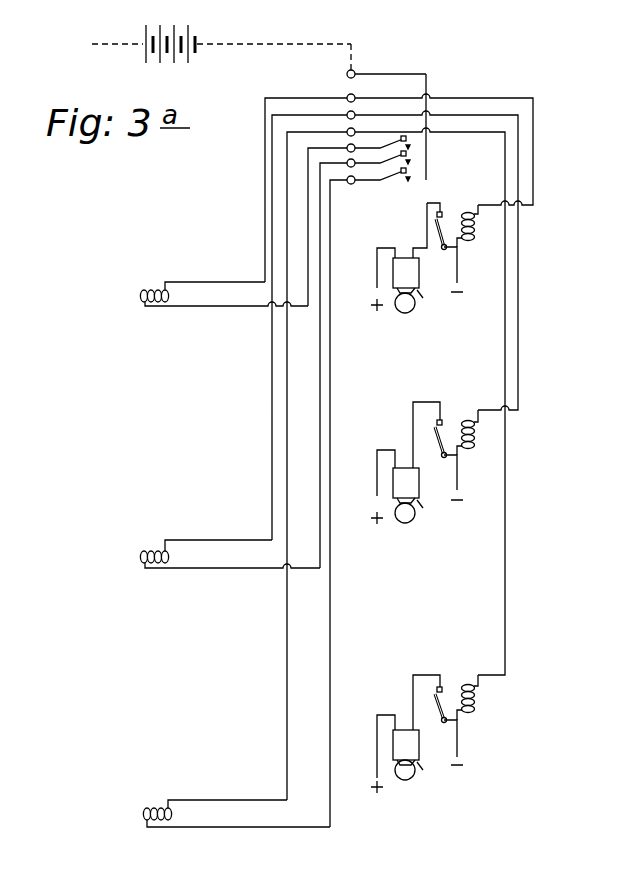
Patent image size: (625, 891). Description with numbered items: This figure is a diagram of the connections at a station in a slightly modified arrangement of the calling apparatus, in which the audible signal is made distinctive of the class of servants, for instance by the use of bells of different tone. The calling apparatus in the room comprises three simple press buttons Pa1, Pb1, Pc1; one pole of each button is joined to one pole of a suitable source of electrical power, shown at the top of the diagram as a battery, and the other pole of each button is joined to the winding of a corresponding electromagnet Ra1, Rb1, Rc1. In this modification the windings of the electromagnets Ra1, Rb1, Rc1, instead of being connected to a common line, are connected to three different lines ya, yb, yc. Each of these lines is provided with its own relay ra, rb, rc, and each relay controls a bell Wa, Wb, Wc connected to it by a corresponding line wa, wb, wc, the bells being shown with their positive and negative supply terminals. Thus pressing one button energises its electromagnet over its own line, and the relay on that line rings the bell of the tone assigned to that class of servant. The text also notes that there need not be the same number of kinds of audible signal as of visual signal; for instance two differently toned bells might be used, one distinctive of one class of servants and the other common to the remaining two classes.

The line ya is at (456, 92).
The line yb is at (477, 117).
The line yc is at (396, 464).
The press button Pa1 is at (408, 146).
The press button Pb1 is at (408, 161).
The press button Pc1 is at (408, 178).
The electromagnet Ra1 is at (222, 309).
The electromagnet Rb1 is at (228, 572).
The electromagnet Rc1 is at (236, 830).
The line wa is at (419, 230).
The line wb is at (413, 435).
The line wc is at (414, 702).
The relay ra is at (478, 226).
The relay rb is at (478, 432).
The relay rc is at (478, 697).
The bell Wa is at (417, 280).
The bell Wb is at (417, 487).
The bell Wc is at (417, 754).